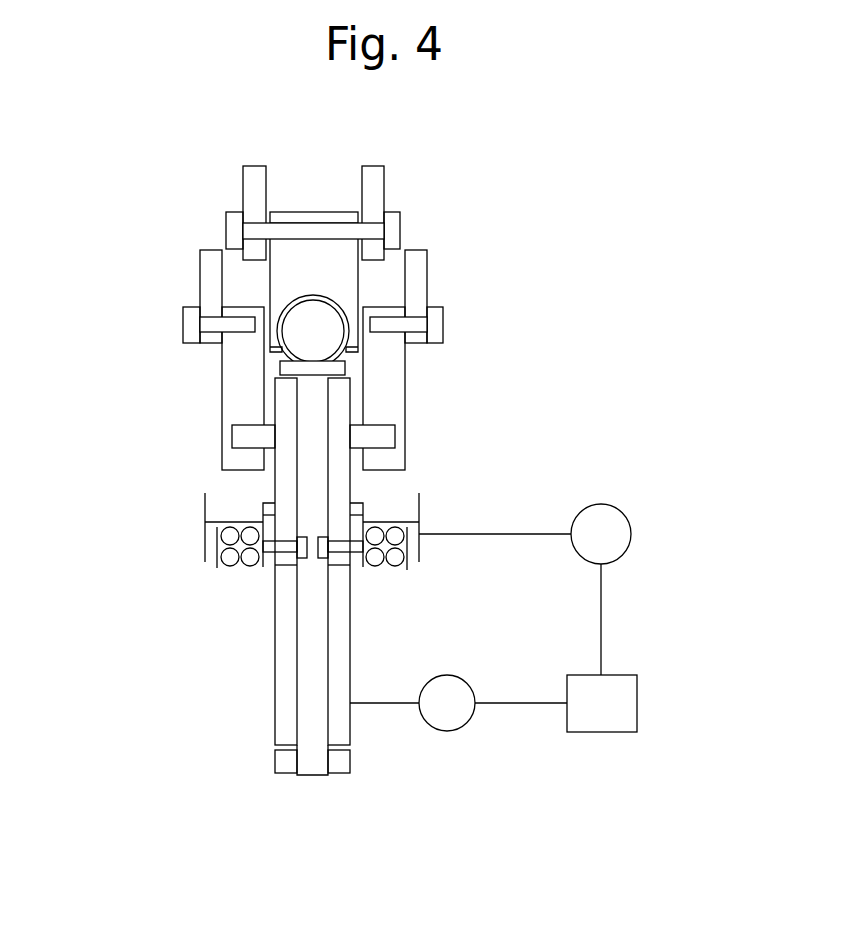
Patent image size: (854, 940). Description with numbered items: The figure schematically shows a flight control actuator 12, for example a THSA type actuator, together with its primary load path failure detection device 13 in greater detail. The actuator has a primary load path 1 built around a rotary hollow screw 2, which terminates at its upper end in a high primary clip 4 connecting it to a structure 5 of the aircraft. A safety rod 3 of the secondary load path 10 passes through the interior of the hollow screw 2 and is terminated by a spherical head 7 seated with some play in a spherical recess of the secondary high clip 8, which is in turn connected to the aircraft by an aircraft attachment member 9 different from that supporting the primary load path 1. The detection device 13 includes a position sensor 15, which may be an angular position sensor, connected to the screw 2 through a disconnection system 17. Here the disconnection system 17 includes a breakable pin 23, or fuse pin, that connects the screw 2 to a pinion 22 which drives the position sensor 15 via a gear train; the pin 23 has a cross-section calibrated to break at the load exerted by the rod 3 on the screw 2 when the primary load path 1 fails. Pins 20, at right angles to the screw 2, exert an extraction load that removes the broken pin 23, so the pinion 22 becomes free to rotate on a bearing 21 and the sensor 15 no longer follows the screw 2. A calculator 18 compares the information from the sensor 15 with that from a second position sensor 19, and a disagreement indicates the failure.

The primary load path 1 is at (268, 733).
The rotary hollow screw 2 is at (343, 416).
The safety rod 3 is at (310, 658).
The high primary clip 4 is at (427, 389).
The structure 5 is at (445, 285).
The spherical head 7 is at (310, 343).
The secondary high clip 8 is at (315, 268).
The aircraft attachment member 9 is at (402, 196).
The secondary load path 10 is at (293, 612).
The flight control actuator 12 is at (156, 552).
The primary load path failure detection device 13 is at (568, 478).
The position sensor 15 is at (613, 530).
The disconnection system 17 is at (405, 592).
The calculator 18 is at (622, 705).
The second position sensor 19 is at (446, 717).
The pins 20 is at (230, 567).
The bearing 21 is at (270, 503).
The pinion 22 is at (205, 498).
The breakable pin 23 is at (318, 558).